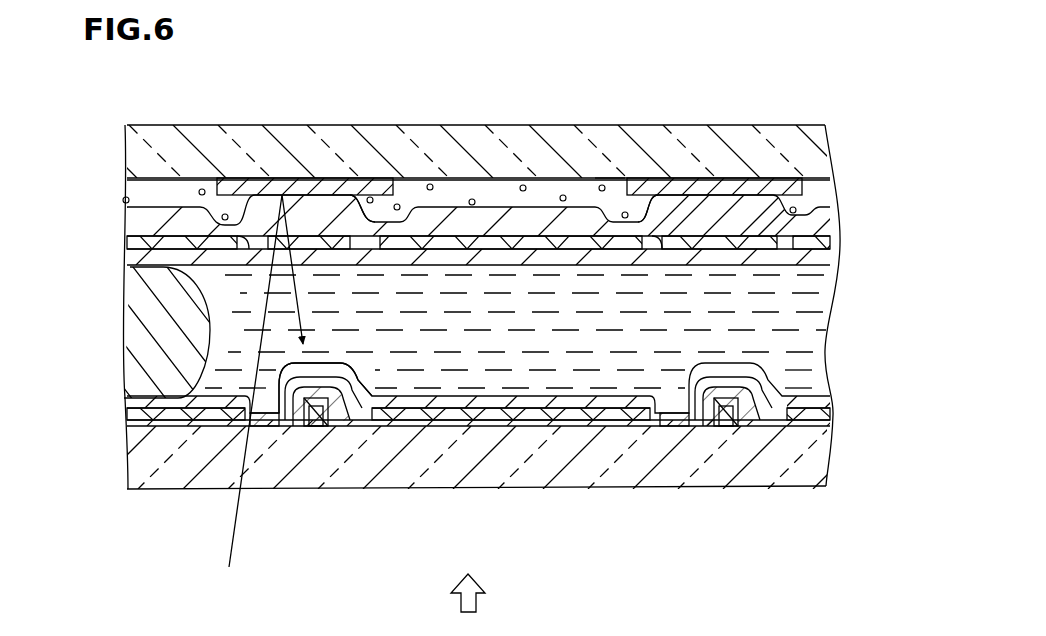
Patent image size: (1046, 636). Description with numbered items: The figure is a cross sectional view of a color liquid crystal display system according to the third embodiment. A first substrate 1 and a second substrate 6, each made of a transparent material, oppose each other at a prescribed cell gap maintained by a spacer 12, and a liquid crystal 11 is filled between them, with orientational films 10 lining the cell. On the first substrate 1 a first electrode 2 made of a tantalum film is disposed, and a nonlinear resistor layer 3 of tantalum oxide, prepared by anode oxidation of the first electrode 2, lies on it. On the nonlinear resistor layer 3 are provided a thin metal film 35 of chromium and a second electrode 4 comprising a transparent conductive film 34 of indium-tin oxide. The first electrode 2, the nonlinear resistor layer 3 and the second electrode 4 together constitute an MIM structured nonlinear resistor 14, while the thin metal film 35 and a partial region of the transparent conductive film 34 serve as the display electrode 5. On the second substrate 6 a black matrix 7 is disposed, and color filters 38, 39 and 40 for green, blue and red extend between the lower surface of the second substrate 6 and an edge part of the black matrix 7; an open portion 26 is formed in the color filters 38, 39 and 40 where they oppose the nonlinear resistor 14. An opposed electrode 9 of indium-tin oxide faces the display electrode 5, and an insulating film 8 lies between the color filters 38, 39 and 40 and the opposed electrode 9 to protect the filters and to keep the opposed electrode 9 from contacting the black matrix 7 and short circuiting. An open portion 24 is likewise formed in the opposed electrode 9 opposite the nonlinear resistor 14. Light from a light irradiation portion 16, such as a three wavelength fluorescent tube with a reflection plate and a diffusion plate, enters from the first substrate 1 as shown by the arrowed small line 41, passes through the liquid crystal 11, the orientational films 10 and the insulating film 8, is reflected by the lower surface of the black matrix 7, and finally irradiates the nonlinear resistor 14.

The first substrate 1 is at (813, 472).
The first electrode 2 is at (312, 426).
The nonlinear resistor layer 3 is at (332, 426).
The second electrode 4 is at (444, 540).
The display electrode 5 is at (505, 428).
The second substrate 6 is at (813, 135).
The black matrix 7 is at (340, 186).
The insulating film 8 is at (823, 228).
The opposed electrode 9 is at (833, 257).
The orientational films 10 is at (832, 260).
The liquid crystal 11 is at (818, 340).
The spacer 12 is at (123, 385).
The nonlinear resistor 14 is at (325, 364).
The light irradiation portion 16 is at (477, 600).
The open portion 24 is at (249, 252).
The open portion 26 is at (372, 224).
The transparent conductive film 34 is at (372, 426).
The thin metal film 35 is at (352, 426).
The color filter 38 is at (598, 186).
The color filter 39 is at (820, 180).
The color filter 40 is at (143, 200).
The arrowed small line 41 is at (230, 550).